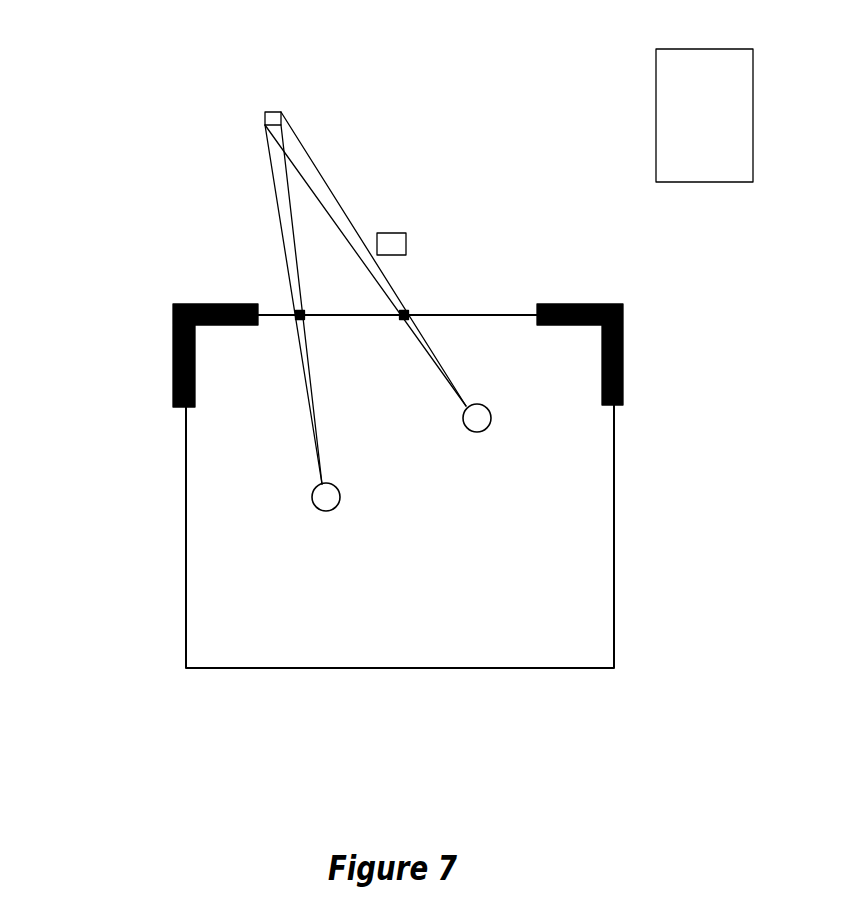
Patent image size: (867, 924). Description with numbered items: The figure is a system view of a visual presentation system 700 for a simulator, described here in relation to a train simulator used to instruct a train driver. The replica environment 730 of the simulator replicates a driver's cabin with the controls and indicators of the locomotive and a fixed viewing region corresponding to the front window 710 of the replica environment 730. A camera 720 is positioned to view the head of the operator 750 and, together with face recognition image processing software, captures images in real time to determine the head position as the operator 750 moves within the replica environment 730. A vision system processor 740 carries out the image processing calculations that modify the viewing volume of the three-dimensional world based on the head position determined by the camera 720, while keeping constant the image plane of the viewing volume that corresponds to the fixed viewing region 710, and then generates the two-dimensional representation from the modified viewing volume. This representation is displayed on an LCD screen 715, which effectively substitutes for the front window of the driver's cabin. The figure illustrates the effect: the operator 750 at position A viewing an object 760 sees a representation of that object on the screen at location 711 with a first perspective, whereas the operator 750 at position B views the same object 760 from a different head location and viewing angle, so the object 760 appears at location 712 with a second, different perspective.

The visual presentation system 700 is at (105, 128).
The front window 710 is at (483, 315).
The LCD screen 715 is at (398, 355).
The screen location 711 is at (297, 313).
The screen location 712 is at (400, 313).
The camera 720 is at (392, 233).
The replica environment 730 is at (556, 567).
The vision system processor 740 is at (700, 49).
The operator 750 is at (312, 495).
The object 760 is at (272, 111).